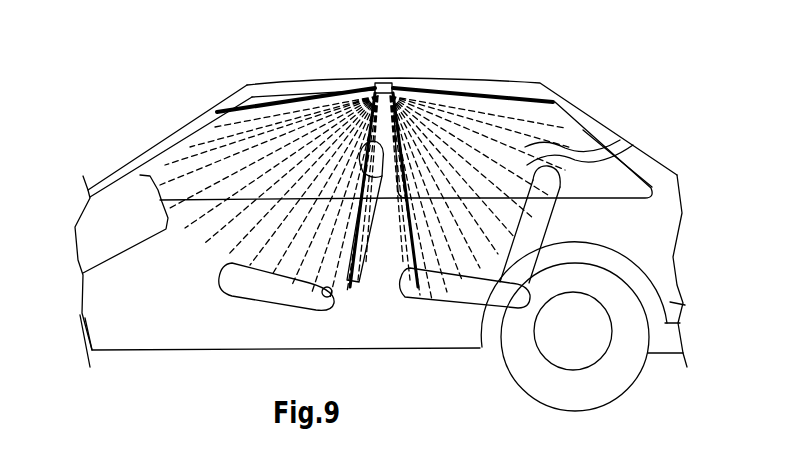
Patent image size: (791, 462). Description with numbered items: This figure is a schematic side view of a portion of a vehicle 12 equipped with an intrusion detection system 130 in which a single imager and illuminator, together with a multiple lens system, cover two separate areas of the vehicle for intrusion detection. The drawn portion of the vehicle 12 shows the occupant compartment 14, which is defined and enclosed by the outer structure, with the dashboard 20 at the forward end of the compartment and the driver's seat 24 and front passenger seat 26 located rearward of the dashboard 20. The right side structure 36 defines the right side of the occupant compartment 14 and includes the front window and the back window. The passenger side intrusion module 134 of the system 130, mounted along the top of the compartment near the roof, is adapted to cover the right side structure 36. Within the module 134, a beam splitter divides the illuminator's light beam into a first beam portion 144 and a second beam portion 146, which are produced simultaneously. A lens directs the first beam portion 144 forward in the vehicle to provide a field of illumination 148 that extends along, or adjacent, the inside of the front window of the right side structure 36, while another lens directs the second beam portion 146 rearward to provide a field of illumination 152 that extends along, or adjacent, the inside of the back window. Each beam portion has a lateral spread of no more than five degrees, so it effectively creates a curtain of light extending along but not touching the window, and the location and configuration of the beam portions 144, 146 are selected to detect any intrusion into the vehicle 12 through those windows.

The vehicle 12 is at (450, 352).
The vehicle occupant compartment 14 is at (616, 240).
The dashboard 20 is at (147, 178).
The driver's seat 24 is at (467, 295).
The front passenger seat 26 is at (284, 295).
The right side structure 36 is at (519, 82).
The intrusion detection system 130 is at (403, 73).
The passenger side intrusion module 134 is at (385, 83).
The first beam portion 144 is at (225, 135).
The second beam portion 146 is at (553, 135).
The field of illumination 148 is at (206, 169).
The field of illumination 152 is at (610, 160).